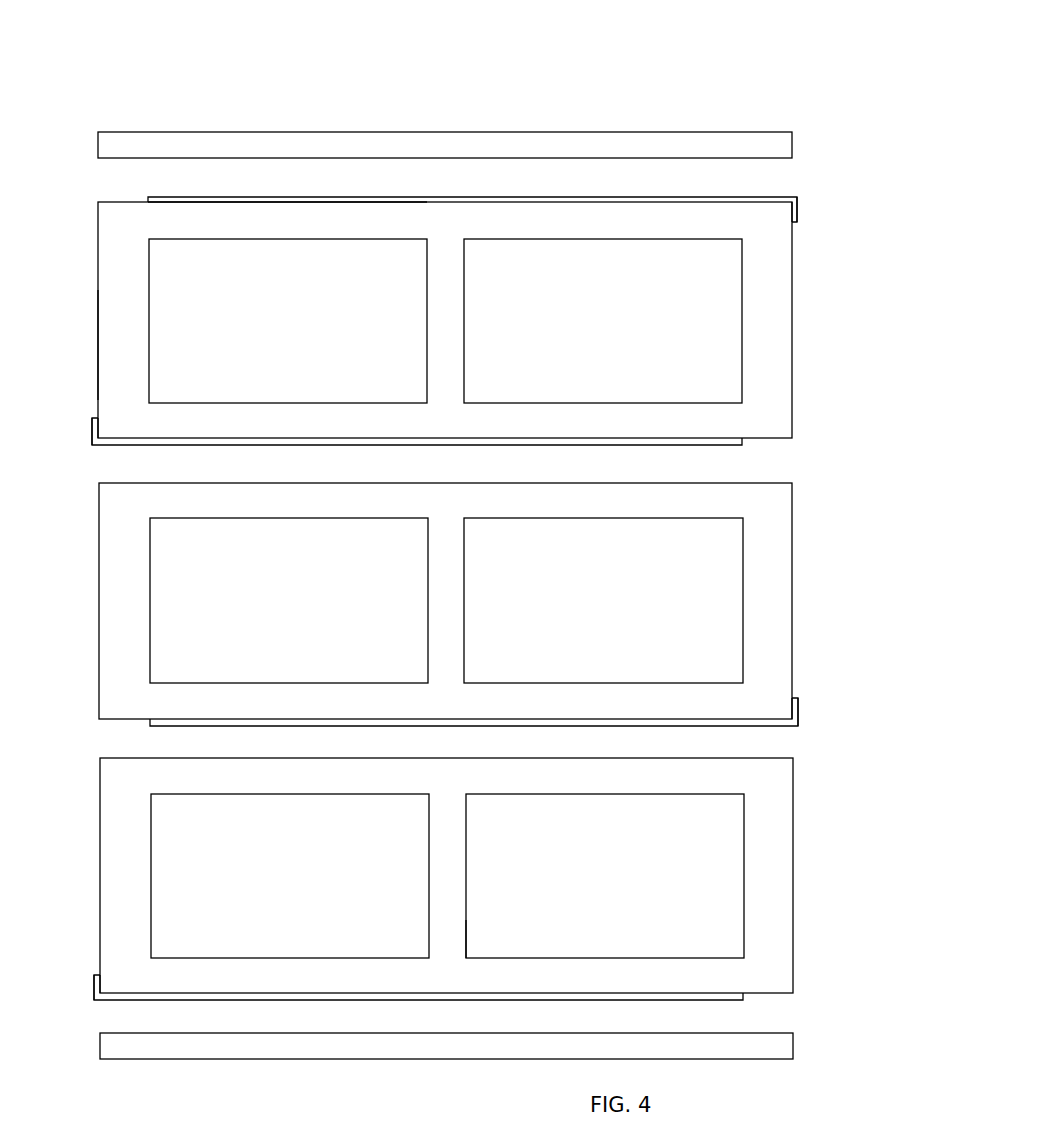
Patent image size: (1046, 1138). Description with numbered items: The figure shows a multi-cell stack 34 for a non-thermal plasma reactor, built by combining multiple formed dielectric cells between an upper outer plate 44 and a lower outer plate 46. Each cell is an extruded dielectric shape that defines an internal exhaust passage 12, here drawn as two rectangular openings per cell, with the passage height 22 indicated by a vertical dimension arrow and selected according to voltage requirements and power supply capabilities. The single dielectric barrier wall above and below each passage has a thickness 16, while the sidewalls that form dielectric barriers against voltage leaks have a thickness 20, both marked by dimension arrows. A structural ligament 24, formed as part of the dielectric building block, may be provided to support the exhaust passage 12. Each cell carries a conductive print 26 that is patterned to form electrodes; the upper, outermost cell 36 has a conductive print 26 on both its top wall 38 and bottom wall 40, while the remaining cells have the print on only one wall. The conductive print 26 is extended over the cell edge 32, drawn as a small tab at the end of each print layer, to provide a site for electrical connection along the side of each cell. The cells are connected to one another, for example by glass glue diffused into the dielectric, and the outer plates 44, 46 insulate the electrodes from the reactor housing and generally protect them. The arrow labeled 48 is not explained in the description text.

The exhaust passage 12 is at (343, 309).
The thickness 16 is at (275, 172).
The thickness 20 is at (200, 316).
The height 22 is at (275, 246).
The structural ligament 24 is at (457, 920).
The conductive print 26 is at (697, 197).
The cell edge 32 is at (798, 208).
The multi-cell stack 34 is at (128, 112).
The upper, outermost cell 36 is at (98, 340).
The top wall 38 is at (134, 204).
The bottom wall 40 is at (758, 438).
The outer plate 44 is at (203, 132).
The outer plate 46 is at (330, 1059).
The stack direction 48 is at (762, 1120).